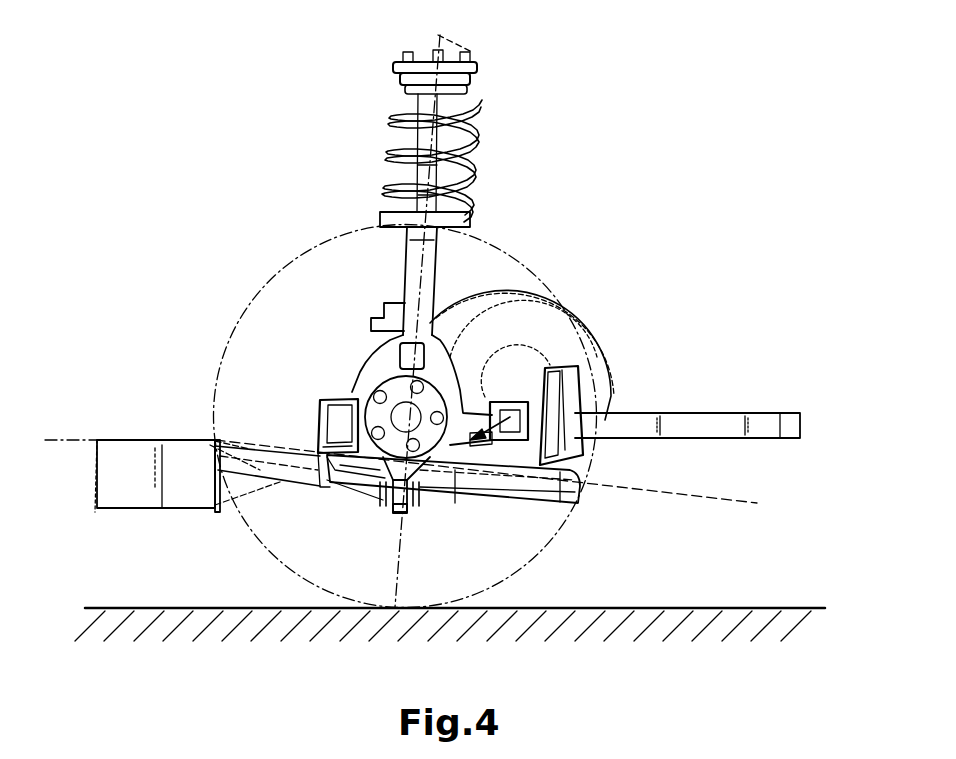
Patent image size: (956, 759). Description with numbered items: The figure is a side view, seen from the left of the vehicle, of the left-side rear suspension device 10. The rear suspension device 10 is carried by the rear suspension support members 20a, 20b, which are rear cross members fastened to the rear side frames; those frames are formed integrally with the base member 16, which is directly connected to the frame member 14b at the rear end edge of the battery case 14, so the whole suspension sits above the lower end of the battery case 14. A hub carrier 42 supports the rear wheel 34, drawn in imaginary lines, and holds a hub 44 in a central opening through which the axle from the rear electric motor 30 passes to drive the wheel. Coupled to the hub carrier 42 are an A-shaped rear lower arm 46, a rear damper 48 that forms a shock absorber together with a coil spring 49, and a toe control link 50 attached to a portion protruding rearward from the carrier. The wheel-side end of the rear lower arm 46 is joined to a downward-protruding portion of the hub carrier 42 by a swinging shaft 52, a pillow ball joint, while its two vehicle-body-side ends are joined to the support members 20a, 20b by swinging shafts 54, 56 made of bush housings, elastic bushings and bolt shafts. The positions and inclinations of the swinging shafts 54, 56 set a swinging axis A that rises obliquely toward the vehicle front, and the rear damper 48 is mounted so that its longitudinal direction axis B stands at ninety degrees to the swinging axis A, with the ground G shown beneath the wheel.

The rear suspension device 10 is at (546, 87).
The battery case 14 is at (163, 440).
The frame member 14b is at (215, 440).
The base member 16 is at (222, 514).
The rear suspension support member 20a is at (326, 402).
The rear suspension support member 20b is at (596, 390).
The rear electric motor 30 is at (508, 292).
The rear wheel 34 is at (300, 257).
The hub carrier 42 is at (384, 342).
The hub 44 is at (360, 393).
The rear lower arm 46 is at (466, 506).
The rear damper 48 is at (606, 385).
The coil spring 49 is at (474, 102).
The toe control link 50 is at (482, 500).
The swinging shaft 52 is at (409, 516).
The swinging shaft 54 is at (320, 472).
The swinging shaft 56 is at (588, 452).
The swinging axis A is at (70, 440).
The longitudinal direction axis B is at (480, 55).
The ground G is at (750, 607).